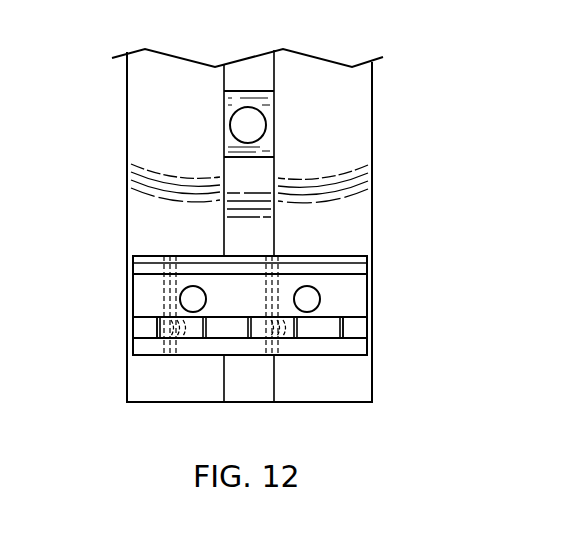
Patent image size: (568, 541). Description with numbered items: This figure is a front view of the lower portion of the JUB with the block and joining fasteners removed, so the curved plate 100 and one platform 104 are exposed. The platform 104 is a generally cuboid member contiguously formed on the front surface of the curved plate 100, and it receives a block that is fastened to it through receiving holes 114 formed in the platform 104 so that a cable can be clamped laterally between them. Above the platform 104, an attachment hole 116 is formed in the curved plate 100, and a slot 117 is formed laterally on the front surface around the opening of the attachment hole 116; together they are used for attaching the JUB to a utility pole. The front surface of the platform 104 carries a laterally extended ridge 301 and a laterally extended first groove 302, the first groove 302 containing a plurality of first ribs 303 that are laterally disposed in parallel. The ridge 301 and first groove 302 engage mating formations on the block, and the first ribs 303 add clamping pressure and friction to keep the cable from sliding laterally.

The curved plate 100 is at (147, 107).
The platform 104 is at (148, 293).
The receiving hole 114 is at (320, 297).
The attachment hole 116 is at (266, 121).
The slot 117 is at (265, 148).
The ridge 301 is at (143, 268).
The first groove 302 is at (143, 327).
The first rib 303 is at (347, 325).